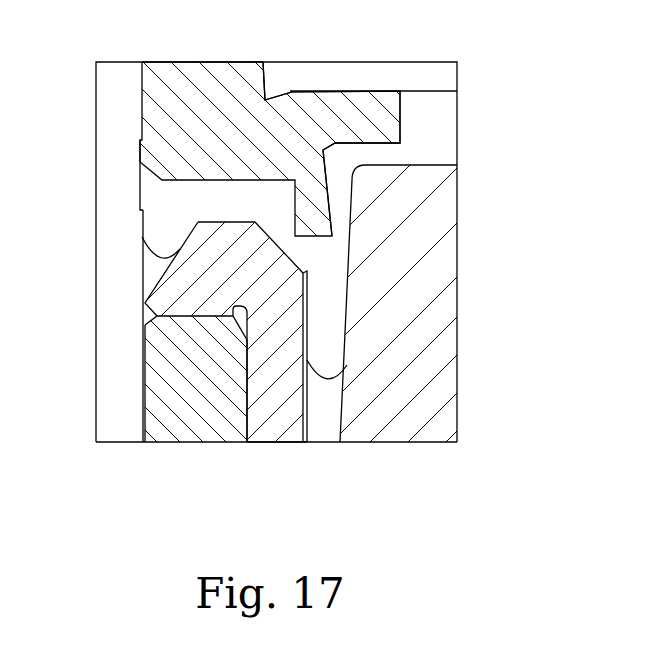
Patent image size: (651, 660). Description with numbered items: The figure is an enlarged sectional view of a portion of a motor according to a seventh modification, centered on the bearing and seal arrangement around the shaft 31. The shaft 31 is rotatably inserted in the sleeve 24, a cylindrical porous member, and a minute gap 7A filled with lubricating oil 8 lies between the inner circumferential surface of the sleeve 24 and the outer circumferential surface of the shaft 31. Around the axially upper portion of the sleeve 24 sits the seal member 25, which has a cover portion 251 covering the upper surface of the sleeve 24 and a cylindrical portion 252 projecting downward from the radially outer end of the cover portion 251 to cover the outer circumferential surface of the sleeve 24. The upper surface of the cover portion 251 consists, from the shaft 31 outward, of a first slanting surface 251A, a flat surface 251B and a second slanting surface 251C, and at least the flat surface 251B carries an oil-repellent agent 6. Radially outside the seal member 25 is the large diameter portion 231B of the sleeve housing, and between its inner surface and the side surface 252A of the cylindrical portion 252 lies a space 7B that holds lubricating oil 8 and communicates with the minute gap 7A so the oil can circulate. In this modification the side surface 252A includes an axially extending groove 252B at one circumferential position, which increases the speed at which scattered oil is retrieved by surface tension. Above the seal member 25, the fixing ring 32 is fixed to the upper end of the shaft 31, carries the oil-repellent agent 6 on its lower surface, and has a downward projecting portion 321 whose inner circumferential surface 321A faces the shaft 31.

The oil-repellent agent 6 is at (177, 178).
The lubricating oil 8 is at (142, 292).
The sleeve 24 is at (165, 443).
The seal member 25 is at (192, 488).
The shaft 31 is at (98, 97).
The fixing ring 32 is at (177, 70).
The projecting portion 321 is at (331, 215).
The inner circumferential surface 321A is at (275, 92).
The large diameter portion 231B is at (324, 222).
The cover portion 251 is at (207, 305).
The first slanting surface 251A is at (158, 283).
The flat surface 251B is at (213, 220).
The second slanting surface 251C is at (290, 253).
The cylindrical portion 252 is at (263, 422).
The side surface 252A is at (312, 432).
The groove 252B is at (307, 395).
The minute gap 7A is at (136, 415).
The space 7B is at (340, 356).